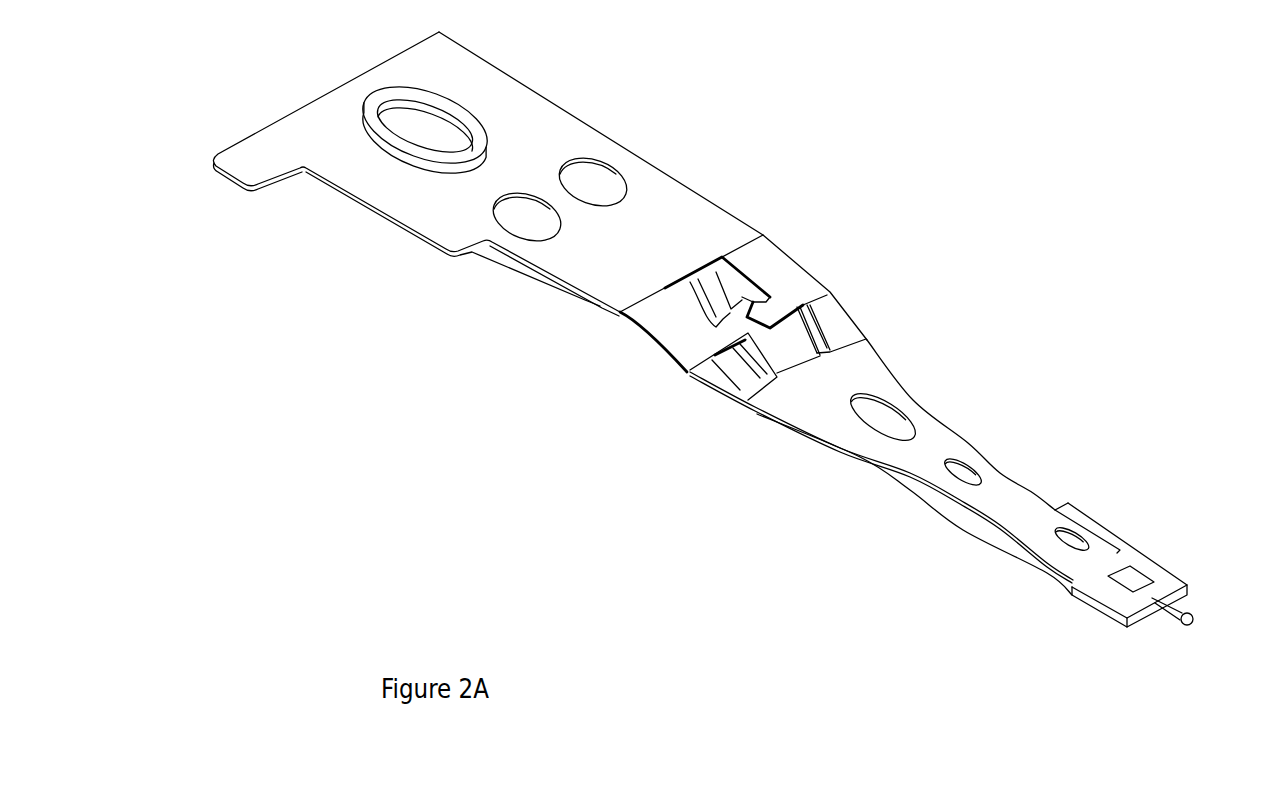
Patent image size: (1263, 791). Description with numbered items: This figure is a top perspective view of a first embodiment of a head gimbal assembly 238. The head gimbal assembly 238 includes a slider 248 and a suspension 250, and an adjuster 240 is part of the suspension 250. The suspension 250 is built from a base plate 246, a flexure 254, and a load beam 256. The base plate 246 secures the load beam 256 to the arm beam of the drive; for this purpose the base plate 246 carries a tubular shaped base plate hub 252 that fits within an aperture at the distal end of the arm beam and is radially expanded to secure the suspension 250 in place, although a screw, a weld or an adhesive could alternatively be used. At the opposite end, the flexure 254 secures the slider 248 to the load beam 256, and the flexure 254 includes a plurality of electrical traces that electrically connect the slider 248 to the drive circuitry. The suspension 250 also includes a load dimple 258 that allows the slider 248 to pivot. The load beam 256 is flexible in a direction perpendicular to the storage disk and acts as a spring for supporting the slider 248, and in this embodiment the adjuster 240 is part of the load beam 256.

The head gimbal assembly 238 is at (867, 143).
The adjuster 240 is at (795, 250).
The base plate 246 is at (428, 170).
The slider 248 is at (1105, 618).
The suspension 250 is at (860, 538).
The base plate hub 252 is at (470, 125).
The flexure 254 is at (895, 485).
The load beam 256 is at (818, 410).
The load dimple 258 is at (1128, 565).